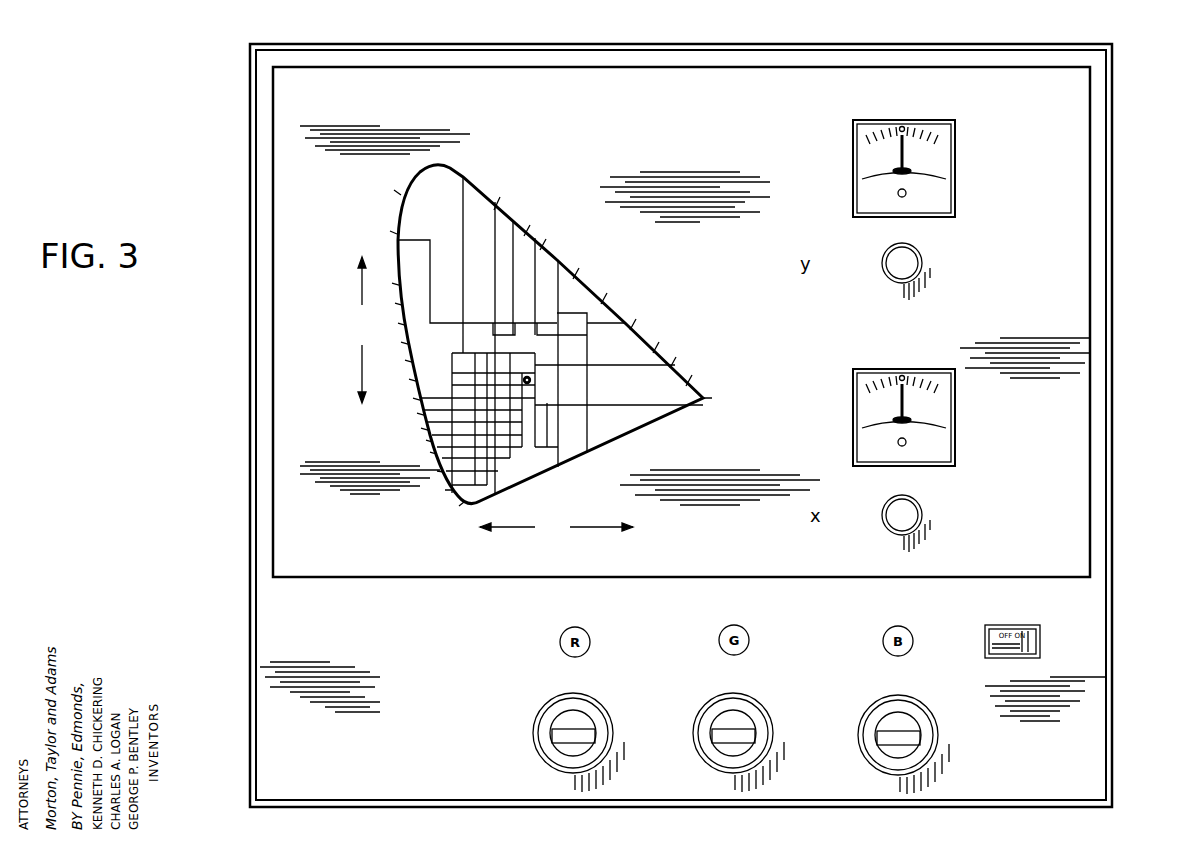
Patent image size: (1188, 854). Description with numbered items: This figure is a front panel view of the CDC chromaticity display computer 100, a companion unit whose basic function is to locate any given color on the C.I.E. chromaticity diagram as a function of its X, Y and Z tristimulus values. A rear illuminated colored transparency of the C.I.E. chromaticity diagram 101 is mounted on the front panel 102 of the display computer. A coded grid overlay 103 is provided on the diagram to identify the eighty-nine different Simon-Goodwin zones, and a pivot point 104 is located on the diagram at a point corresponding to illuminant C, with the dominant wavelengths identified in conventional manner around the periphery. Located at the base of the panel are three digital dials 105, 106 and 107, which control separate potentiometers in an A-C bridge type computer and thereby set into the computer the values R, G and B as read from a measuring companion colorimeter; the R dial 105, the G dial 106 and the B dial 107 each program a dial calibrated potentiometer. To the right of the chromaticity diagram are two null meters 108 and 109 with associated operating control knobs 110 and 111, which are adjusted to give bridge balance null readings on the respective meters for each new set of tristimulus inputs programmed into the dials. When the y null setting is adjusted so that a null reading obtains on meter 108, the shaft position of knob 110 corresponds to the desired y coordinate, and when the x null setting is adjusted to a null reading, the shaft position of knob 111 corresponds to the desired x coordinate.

The color measuring instrument housing 100 is at (1110, 213).
The C.I.E. chromaticity diagram 101 is at (447, 177).
The front panel 102 is at (1073, 104).
The coded grid overlay 103 is at (558, 281).
The pivot point 104 is at (531, 378).
The R dial 105 is at (587, 718).
The G dial 106 is at (747, 718).
The B dial 107 is at (907, 718).
The null meter 108 is at (943, 165).
The null meter 109 is at (943, 418).
The operating control knob 110 is at (913, 266).
The operating control knob 111 is at (913, 517).